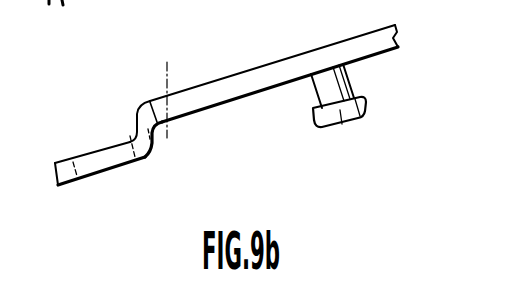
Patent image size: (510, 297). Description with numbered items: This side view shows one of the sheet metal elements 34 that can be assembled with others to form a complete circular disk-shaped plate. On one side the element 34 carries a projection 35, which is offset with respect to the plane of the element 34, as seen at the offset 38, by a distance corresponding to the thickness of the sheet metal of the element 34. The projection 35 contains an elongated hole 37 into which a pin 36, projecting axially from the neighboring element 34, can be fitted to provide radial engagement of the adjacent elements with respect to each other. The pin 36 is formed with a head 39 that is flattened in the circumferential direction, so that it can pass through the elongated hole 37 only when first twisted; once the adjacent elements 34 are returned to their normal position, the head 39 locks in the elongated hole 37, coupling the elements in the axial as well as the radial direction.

The element 34 is at (225, 103).
The projection 35 is at (63, 183).
The pin 36 is at (322, 84).
The elongated hole 37 is at (107, 171).
The offset 38 is at (152, 145).
The head 39 is at (338, 126).